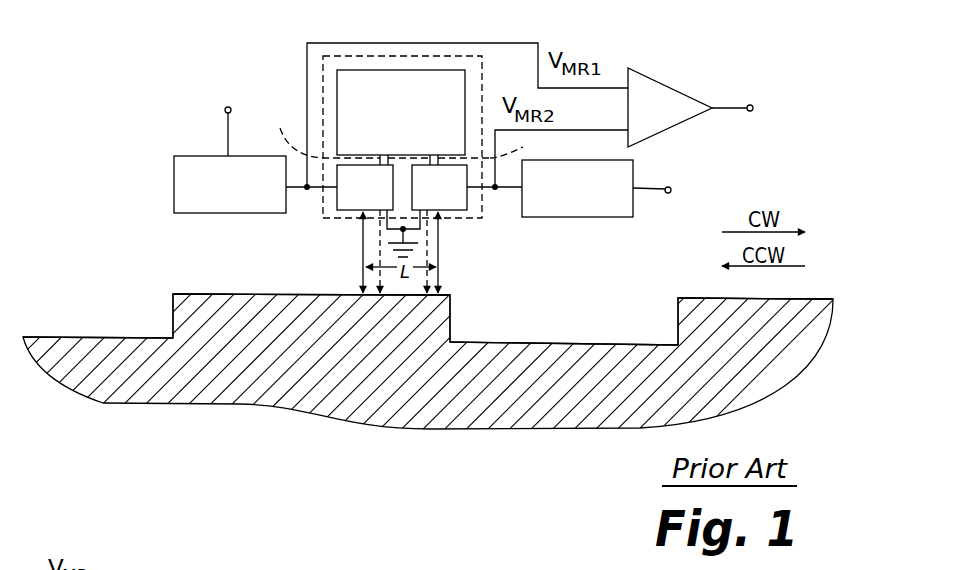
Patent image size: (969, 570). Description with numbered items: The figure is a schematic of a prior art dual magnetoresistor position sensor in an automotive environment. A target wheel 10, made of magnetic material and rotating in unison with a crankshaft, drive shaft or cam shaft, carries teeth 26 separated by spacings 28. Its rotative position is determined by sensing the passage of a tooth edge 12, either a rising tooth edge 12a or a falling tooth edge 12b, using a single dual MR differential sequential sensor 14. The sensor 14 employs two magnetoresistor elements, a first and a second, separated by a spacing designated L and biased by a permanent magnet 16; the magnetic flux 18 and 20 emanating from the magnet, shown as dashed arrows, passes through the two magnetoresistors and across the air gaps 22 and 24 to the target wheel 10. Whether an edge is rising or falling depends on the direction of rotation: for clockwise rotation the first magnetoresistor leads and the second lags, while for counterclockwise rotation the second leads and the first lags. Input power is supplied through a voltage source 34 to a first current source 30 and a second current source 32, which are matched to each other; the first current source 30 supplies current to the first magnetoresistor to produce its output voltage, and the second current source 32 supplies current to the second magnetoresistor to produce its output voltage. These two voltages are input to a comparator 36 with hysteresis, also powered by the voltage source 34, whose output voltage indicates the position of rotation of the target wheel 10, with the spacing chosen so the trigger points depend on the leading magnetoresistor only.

The target wheel 10 is at (110, 403).
The tooth edge 12 is at (503, 296).
The rising tooth edge 12a is at (450, 317).
The falling tooth edge 12b is at (678, 313).
The single dual MR differential sequential sensor 14 is at (325, 219).
The permanent magnet 16 is at (390, 70).
The magnetic flux 18 is at (381, 132).
The magnetic flux 20 is at (518, 147).
The air gap 22 is at (365, 257).
The air gap 24 is at (440, 238).
The teeth 26 is at (200, 294).
The spacings 28 is at (103, 337).
The CURRENT SOURCE1 30 is at (173, 180).
The CURRENT SOURCE2 32 is at (577, 218).
The voltage source 34 is at (227, 123).
The comparator 36 is at (665, 83).